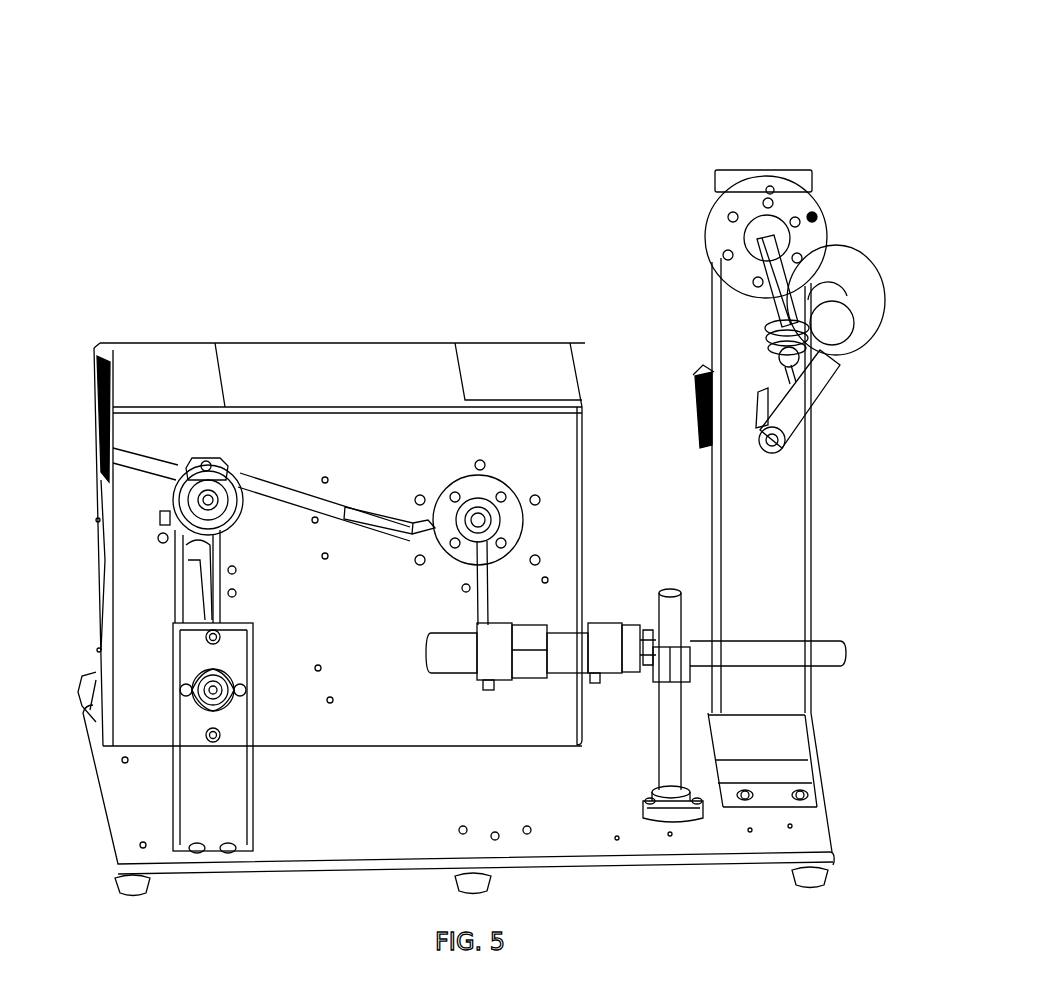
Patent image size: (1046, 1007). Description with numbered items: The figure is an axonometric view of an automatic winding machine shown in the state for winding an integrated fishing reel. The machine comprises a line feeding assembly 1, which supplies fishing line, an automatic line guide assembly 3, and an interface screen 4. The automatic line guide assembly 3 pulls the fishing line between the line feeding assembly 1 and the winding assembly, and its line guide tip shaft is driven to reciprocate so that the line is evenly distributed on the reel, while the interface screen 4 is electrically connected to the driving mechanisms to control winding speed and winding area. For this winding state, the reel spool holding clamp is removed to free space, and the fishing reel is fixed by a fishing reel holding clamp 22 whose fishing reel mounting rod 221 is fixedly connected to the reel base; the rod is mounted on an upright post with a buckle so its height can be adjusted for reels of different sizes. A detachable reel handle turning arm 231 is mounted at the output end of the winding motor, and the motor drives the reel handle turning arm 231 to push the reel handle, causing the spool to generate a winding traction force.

The line feeding assembly 1 is at (713, 177).
The automatic line guide assembly 3 is at (183, 447).
The interface screen 4 is at (295, 365).
The fishing reel holding clamp 22 is at (680, 597).
The fishing reel mounting rod 221 is at (620, 660).
The reel handle turning arm 231 is at (475, 517).